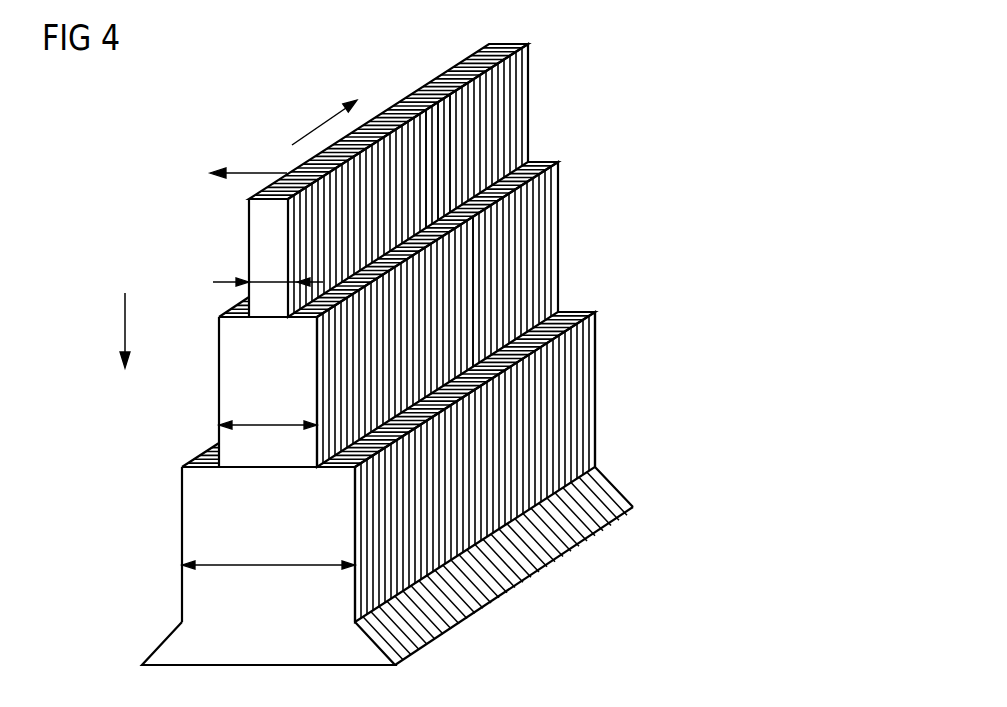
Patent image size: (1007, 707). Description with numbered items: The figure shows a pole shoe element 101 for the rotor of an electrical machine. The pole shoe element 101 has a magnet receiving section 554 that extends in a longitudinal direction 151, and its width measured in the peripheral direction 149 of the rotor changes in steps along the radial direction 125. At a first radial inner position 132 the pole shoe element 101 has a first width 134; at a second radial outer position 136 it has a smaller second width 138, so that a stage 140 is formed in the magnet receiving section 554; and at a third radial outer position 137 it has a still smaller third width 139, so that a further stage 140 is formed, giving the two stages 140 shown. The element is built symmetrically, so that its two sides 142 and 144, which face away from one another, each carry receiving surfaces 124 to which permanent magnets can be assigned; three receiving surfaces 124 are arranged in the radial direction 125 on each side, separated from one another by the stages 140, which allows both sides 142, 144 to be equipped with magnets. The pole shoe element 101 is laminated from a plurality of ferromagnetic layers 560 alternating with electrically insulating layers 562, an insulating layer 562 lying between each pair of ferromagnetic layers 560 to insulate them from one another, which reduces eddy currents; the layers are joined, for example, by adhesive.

The pole shoe element 101 is at (558, 120).
The receiving surfaces 124 is at (490, 94).
The radial direction 125 is at (122, 328).
The first radial inner position 132 is at (378, 556).
The first width 134 is at (270, 570).
The middle tier side face 136 is at (337, 383).
The third radial outer position 137 is at (327, 263).
The second width 138 is at (270, 430).
The third width 139 is at (270, 288).
The stage 140 is at (535, 160).
The side 142 is at (619, 414).
The side 144 is at (125, 492).
The peripheral direction 149 is at (250, 172).
The longitudinal direction 151 is at (315, 128).
The magnet receiving section 554 is at (486, 285).
The ferromagnetic layers 560 is at (427, 160).
The electrically insulating layers 562 is at (436, 147).